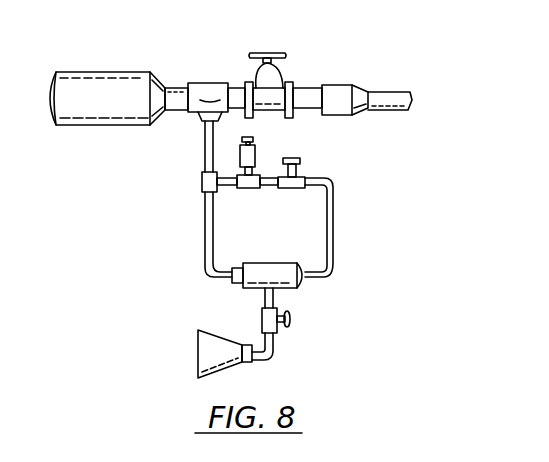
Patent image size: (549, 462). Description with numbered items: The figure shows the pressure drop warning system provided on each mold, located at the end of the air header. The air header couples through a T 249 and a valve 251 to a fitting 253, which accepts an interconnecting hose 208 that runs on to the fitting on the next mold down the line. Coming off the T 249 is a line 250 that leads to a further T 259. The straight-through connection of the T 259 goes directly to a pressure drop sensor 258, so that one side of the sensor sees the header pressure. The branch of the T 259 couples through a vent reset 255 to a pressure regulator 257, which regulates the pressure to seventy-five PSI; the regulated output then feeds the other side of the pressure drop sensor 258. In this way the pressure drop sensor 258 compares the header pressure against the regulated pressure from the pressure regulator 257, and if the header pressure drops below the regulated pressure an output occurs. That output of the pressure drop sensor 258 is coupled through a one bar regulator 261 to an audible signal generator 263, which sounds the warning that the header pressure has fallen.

The interconnecting hose 208 is at (397, 92).
The T 249 is at (206, 90).
The line 250 is at (205, 150).
The valve 251 is at (282, 72).
The fitting 253 is at (341, 85).
The vent reset 255 is at (257, 150).
The pressure regulator 257 is at (300, 178).
The pressure drop sensor 258 is at (276, 265).
The T 259 is at (203, 187).
The one bar regulator 261 is at (290, 318).
The audible signal generator 263 is at (215, 337).